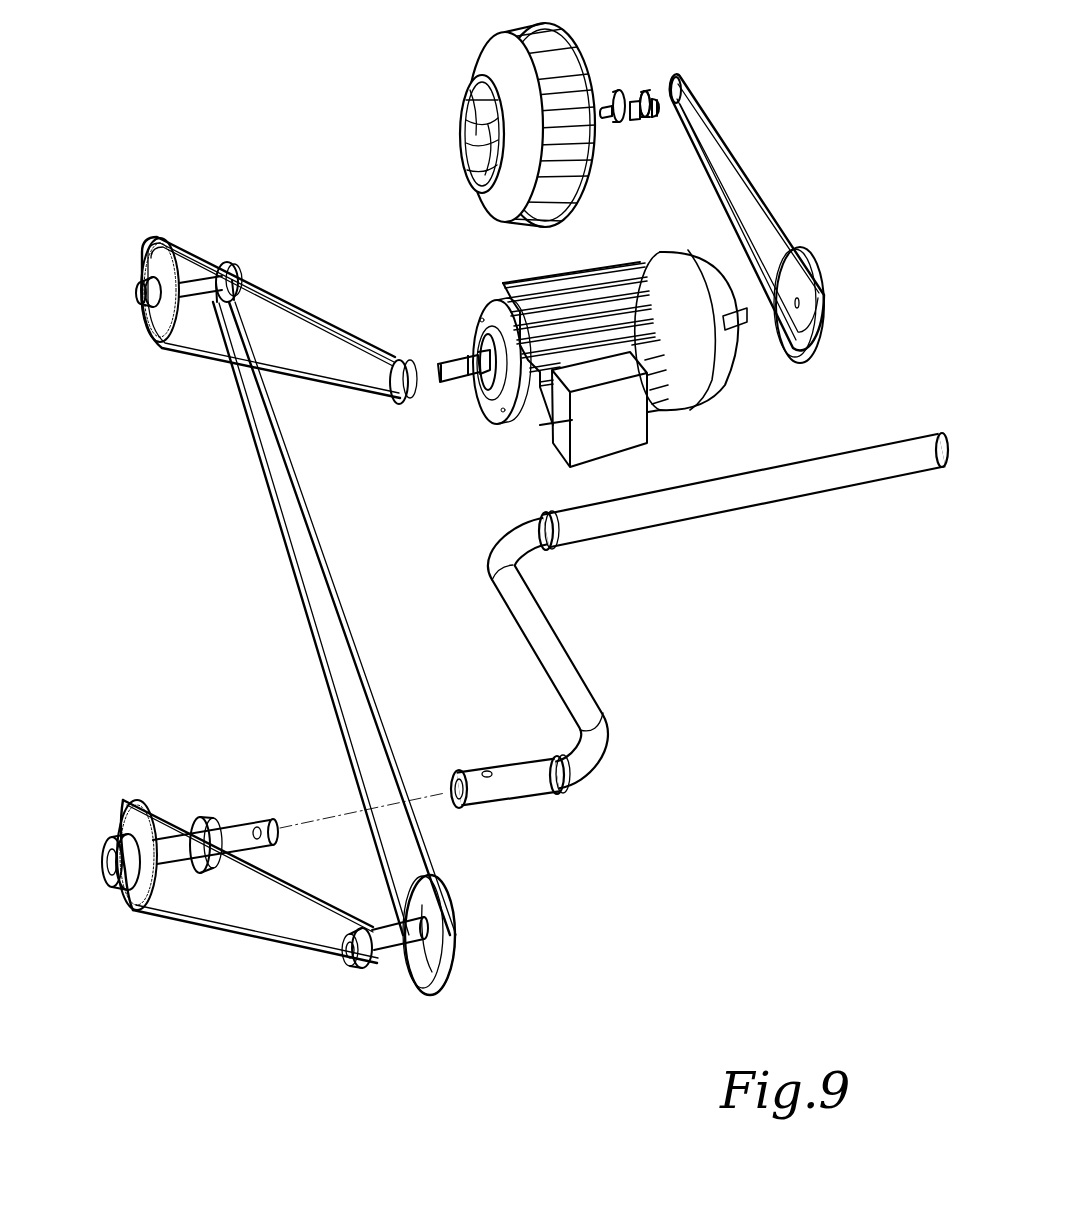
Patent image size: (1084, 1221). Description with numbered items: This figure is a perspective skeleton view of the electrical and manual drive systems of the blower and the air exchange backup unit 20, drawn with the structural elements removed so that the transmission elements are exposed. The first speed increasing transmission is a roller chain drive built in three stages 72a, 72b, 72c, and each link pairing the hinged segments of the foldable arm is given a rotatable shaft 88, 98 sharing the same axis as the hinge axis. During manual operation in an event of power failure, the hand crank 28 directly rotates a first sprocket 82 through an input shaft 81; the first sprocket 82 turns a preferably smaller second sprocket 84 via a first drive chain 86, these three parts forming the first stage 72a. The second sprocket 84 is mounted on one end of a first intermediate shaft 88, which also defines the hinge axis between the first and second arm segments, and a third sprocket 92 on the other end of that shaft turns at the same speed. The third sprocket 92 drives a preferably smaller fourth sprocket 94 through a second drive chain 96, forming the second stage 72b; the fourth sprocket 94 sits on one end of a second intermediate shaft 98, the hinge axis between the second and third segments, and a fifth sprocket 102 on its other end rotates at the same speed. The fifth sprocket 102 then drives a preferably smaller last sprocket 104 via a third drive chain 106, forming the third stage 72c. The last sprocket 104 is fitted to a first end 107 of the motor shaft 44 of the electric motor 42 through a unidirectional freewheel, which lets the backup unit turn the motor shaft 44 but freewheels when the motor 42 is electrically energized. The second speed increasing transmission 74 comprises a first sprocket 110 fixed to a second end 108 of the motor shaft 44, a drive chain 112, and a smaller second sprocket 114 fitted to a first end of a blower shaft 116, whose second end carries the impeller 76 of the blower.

The air exchange backup unit 20 is at (205, 583).
The hand crank 28 is at (562, 648).
The motor 42 is at (690, 390).
The motor shaft 44 is at (488, 378).
The first stage 72a is at (243, 920).
The second stage 72b is at (337, 665).
The third stage 72c is at (303, 343).
The second speed increasing transmission 74 is at (832, 262).
The impeller 76 is at (462, 92).
The input shaft 81 is at (245, 820).
The first sprocket 82 is at (138, 898).
The second sprocket 84 is at (370, 958).
The first drive chain 86 is at (310, 936).
The first intermediate shaft 88 is at (395, 960).
The third sprocket 92 is at (425, 968).
The fourth sprocket 94 is at (185, 340).
The second drive chain 96 is at (325, 545).
The second intermediate shaft 98 is at (192, 272).
The fifth sprocket 102 is at (150, 272).
The last sprocket 104 is at (397, 393).
The third drive chain 106 is at (262, 290).
The first end of the motor shaft 107 is at (462, 355).
The second end of the motor shaft 108 is at (752, 334).
The first sprocket of the second speed increasing transmission 110 is at (805, 335).
The drive chain 112 is at (705, 145).
The second sprocket of the second speed increasing transmission 114 is at (688, 112).
The blower shaft 116 is at (632, 92).